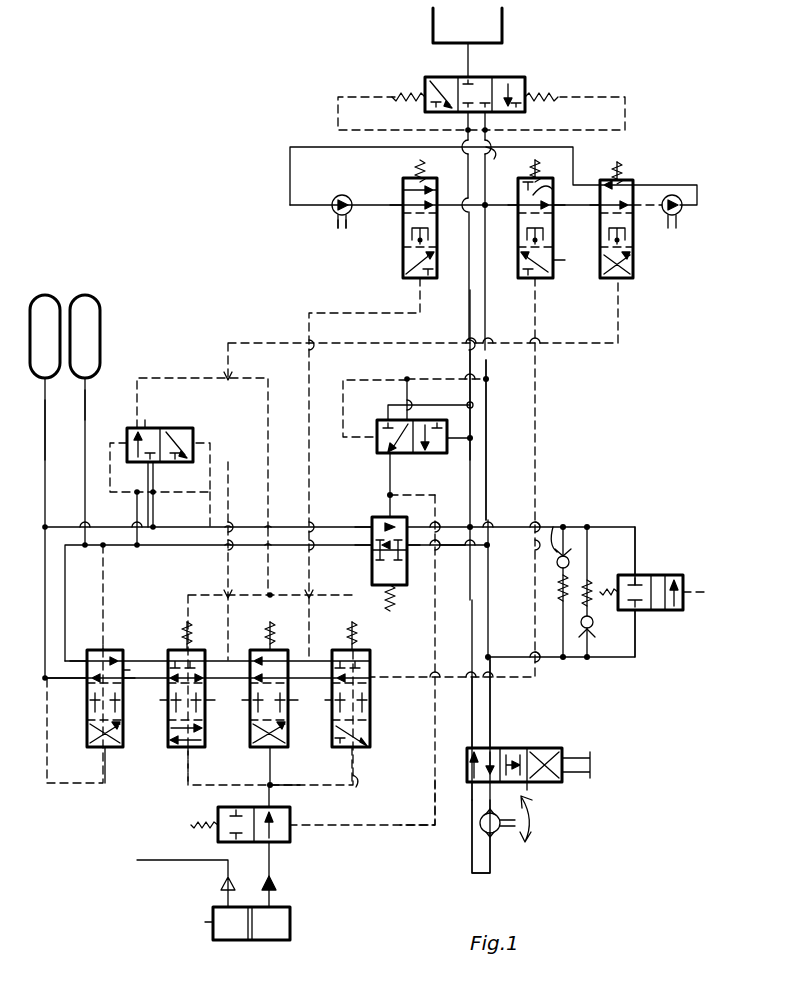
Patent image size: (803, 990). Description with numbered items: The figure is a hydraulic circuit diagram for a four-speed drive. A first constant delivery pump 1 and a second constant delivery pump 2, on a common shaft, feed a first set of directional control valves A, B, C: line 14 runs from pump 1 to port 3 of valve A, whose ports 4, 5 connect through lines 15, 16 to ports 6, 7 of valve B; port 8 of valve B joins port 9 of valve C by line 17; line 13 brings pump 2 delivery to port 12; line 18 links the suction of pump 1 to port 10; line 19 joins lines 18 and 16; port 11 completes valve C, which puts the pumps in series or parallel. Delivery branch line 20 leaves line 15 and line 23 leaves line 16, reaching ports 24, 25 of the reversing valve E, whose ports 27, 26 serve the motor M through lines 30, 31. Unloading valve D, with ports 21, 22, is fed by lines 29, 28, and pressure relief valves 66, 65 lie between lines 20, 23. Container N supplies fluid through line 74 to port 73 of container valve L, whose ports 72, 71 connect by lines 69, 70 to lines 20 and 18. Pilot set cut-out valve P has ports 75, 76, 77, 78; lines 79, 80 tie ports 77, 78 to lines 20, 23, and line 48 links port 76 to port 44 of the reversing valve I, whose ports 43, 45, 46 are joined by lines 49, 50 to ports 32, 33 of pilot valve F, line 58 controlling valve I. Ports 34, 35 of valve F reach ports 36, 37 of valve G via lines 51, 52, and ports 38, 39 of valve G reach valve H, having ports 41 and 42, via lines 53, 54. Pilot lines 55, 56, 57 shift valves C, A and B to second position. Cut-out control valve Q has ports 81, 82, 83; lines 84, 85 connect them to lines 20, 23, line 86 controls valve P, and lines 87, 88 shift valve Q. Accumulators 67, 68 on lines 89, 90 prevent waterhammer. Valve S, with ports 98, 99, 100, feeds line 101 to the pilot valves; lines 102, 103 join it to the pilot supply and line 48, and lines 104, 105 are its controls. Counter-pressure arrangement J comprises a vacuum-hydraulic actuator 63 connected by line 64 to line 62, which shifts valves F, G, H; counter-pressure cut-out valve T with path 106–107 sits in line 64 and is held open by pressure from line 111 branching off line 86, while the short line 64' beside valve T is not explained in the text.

The container N is at (505, 42).
The container valve L is at (528, 75).
The flow line 74 is at (458, 70).
The port 73 is at (478, 78).
The port 71 is at (465, 118).
The port 72 is at (490, 118).
The flow line 70 is at (455, 148).
The flow line 18 is at (290, 165).
The flow line 14 is at (355, 208).
The port 5 is at (402, 182).
The flow line 19 is at (470, 160).
The flow line 16 is at (468, 175).
The flow line 69 is at (515, 166).
The port 7 is at (545, 185).
The port 10 is at (597, 165).
The port 12 is at (630, 185).
The flow line 13 is at (695, 182).
The first constant delivery pump 1 is at (332, 212).
The port 3 is at (400, 212).
The port 4 is at (448, 240).
The flow line 15 is at (440, 240).
The port 6 is at (515, 225).
The port 8 is at (555, 213).
The port 9 is at (594, 215).
The port 11 is at (635, 220).
The second constant delivery pump 2 is at (678, 215).
The first directional control valve A is at (403, 262).
The second directional control valve B is at (522, 280).
The third directional control valve C is at (618, 282).
The flow line 17 is at (572, 250).
The flow line 56 is at (332, 312).
The flow line 23 is at (465, 315).
The accumulator 68 is at (45, 290).
The accumulator 67 is at (95, 290).
The flow line 89 is at (88, 398).
The flow line 90 is at (47, 450).
The flow line 101 is at (170, 368).
The flow line 55 is at (253, 333).
The port 98 is at (140, 425).
The pilot set control reversing valve S is at (190, 425).
The flow line 104 is at (100, 452).
The port 99 is at (140, 467).
The port 100 is at (158, 470).
The flow line 102 is at (136, 505).
The flow line 103 is at (160, 508).
The flow line 105 is at (214, 510).
The flow line 48 is at (245, 525).
The flow line 87 is at (370, 378).
The flow line 84 is at (422, 378).
The port 83 is at (395, 400).
The port 82 is at (402, 405).
The flow line 85 is at (474, 405).
The flow line 57 is at (540, 420).
The cut-out control valve Q is at (377, 445).
The port 81 is at (392, 460).
The flow line 88 is at (455, 448).
The delivery branch line 20 is at (490, 460).
The flow line 86 is at (385, 493).
The port 76 is at (368, 525).
The port 78 is at (428, 503).
The flow line 80 is at (455, 515).
The port 75 is at (366, 548).
The port 77 is at (405, 555).
The flow line 79 is at (450, 553).
The pilot set cut-out valve P is at (397, 600).
The pressure relief valve 66 is at (555, 520).
The flow line 29 is at (615, 522).
The port 21 is at (640, 570).
The circuit unloading valve D is at (675, 572).
The port 22 is at (640, 615).
The pressure relief valve 65 is at (595, 632).
The flow line 28 is at (628, 665).
The flow line 58 is at (118, 590).
The port 43 is at (80, 668).
The port 45 is at (115, 668).
The port 32 is at (171, 633).
The port 34 is at (210, 668).
The flow line 49 is at (128, 665).
The flow line 51 is at (240, 630).
The port 36 is at (253, 633).
The port 38 is at (294, 668).
The flow line 53 is at (320, 625).
The port 42 is at (372, 660).
The port 44 is at (85, 688).
The port 46 is at (128, 690).
The port 33 is at (160, 700).
The port 35 is at (210, 690).
The port 37 is at (240, 700).
The port 39 is at (295, 690).
The port 41 is at (320, 700).
The flow line 50 is at (118, 735).
The flow line 52 is at (200, 735).
The flow line 54 is at (285, 735).
The pilot set flow lines reversing valve I is at (90, 755).
The first pilot valve F is at (170, 755).
The second pilot valve G is at (258, 755).
The third pilot valve H is at (340, 755).
The flow line connection 111 is at (430, 722).
The port 25 is at (465, 745).
The port 24 is at (505, 740).
The circuit reversing valve E is at (560, 745).
The port 26 is at (470, 785).
The port 27 is at (497, 788).
The flow line 30 is at (500, 800).
The flow line 31 is at (465, 850).
The hydraulic constant displacement motor M is at (496, 835).
The port 107 is at (262, 805).
The line 64' is at (302, 799).
The flow line 62 is at (369, 778).
The counter-pressure cut-out valve T is at (292, 832).
The port 106 is at (272, 845).
The flow line 64 is at (289, 888).
The vacuum-hydraulic actuator 63 is at (210, 922).
The counter-pressure control arrangement J is at (292, 922).